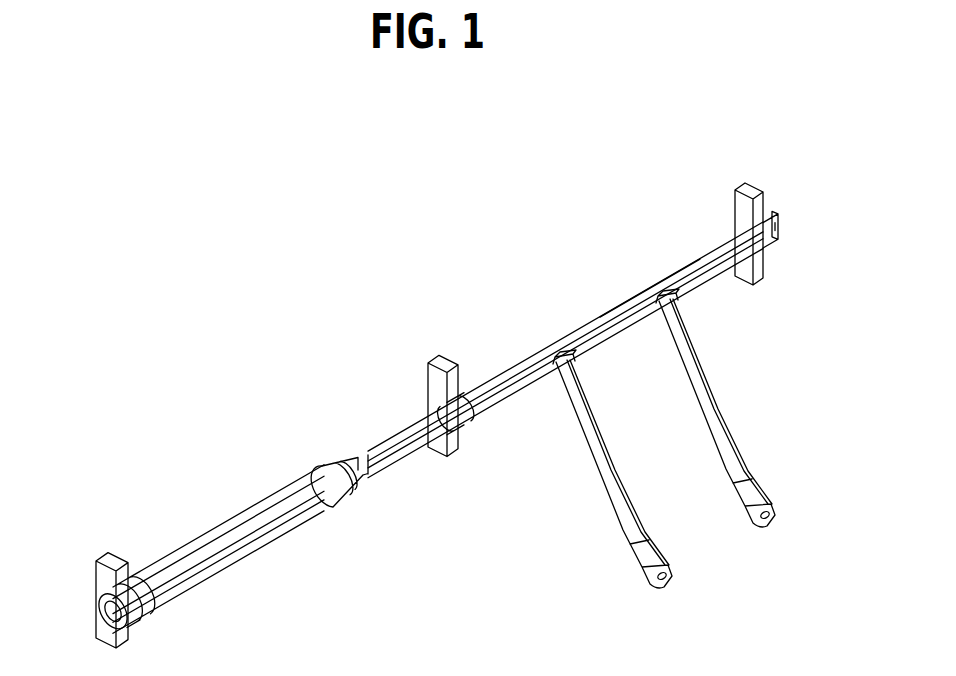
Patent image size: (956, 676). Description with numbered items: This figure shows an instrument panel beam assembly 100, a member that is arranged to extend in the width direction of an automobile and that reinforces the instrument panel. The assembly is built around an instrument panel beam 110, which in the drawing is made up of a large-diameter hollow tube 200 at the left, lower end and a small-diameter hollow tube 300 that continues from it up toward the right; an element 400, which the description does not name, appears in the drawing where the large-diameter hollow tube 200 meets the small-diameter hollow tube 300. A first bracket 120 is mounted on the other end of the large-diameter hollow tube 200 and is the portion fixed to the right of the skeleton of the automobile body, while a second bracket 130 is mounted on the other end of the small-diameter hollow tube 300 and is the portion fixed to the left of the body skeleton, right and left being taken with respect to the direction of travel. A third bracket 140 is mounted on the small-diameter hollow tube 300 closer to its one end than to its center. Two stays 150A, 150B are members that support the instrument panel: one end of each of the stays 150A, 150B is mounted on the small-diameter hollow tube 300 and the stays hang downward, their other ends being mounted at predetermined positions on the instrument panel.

The instrument panel beam assembly 100 is at (483, 206).
The instrument panel beam 110 is at (512, 366).
The first bracket 120 is at (103, 558).
The second bracket 130 is at (760, 284).
The third bracket 140 is at (428, 366).
The stay 150A is at (602, 468).
The stay 150B is at (708, 420).
The large-diameter hollow tube 200 is at (280, 488).
The small-diameter hollow tube 300 is at (635, 303).
The coupling 400 is at (343, 465).